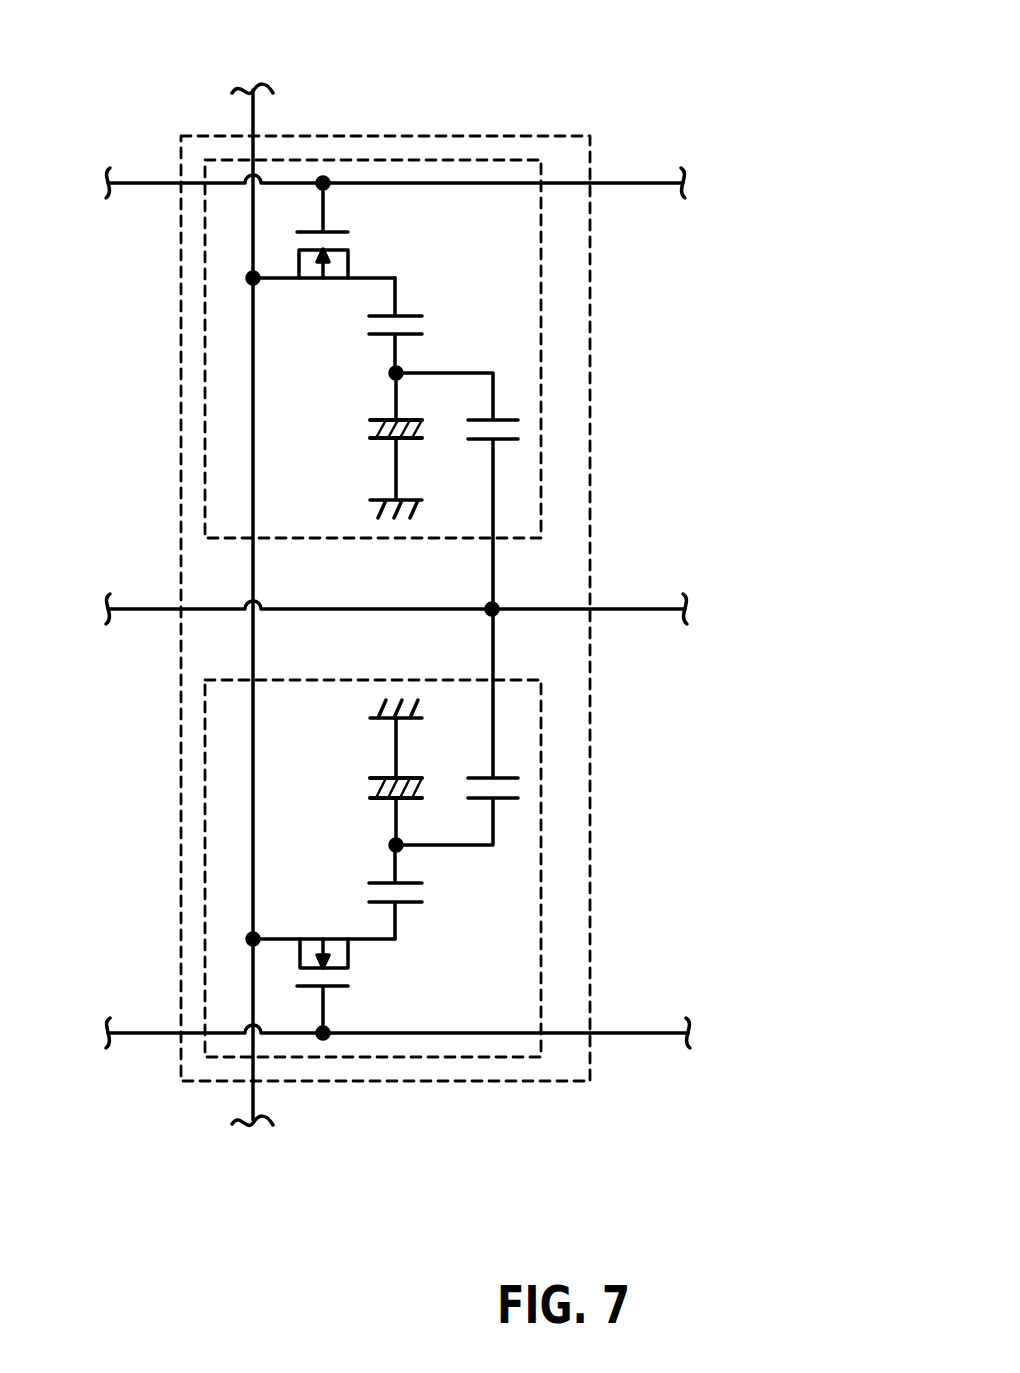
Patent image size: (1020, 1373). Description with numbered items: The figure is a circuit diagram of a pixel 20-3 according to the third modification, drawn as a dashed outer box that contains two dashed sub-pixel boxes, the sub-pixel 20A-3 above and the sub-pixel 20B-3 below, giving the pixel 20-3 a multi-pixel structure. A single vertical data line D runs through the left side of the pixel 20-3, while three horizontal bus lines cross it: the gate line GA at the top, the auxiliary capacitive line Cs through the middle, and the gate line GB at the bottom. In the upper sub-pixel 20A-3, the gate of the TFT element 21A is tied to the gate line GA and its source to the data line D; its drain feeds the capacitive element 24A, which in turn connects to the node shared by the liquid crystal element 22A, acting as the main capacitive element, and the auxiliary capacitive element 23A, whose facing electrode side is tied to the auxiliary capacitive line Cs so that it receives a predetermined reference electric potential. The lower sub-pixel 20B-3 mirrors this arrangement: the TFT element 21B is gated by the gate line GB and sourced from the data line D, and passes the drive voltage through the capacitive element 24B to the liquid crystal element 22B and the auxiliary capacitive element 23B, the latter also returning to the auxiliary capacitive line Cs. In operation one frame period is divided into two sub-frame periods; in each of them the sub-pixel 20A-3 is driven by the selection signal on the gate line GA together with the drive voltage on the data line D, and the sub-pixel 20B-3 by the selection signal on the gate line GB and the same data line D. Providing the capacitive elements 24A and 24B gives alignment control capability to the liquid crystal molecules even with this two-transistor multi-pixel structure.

The data line D is at (252, 118).
The gate line GA is at (653, 183).
The gate line GB is at (652, 1033).
The auxiliary capacitive line Cs is at (653, 609).
The pixel 20-3 is at (450, 1090).
The sub-pixel 20A-3 is at (543, 372).
The sub-pixel 20B-3 is at (543, 822).
The TFT element 21A is at (273, 250).
The liquid crystal element 22A is at (357, 440).
The auxiliary capacitive element 23A is at (530, 427).
The capacitive element 24A is at (432, 327).
The TFT element 21B is at (273, 974).
The liquid crystal element 22B is at (357, 792).
The auxiliary capacitive element 23B is at (530, 792).
The capacitive element 24B is at (432, 888).